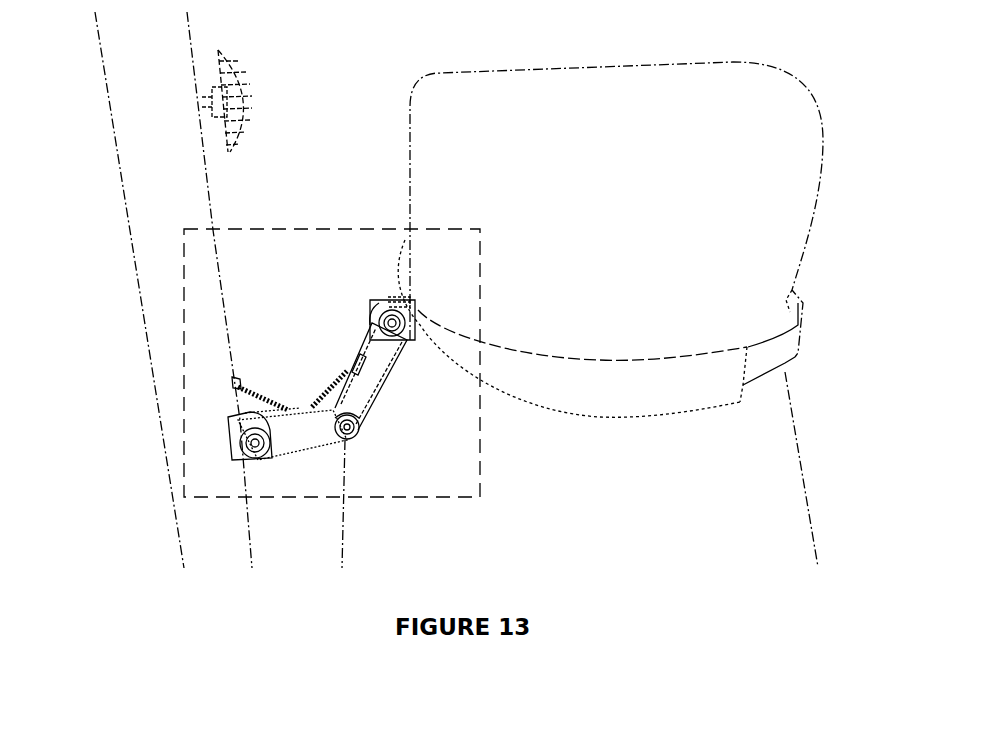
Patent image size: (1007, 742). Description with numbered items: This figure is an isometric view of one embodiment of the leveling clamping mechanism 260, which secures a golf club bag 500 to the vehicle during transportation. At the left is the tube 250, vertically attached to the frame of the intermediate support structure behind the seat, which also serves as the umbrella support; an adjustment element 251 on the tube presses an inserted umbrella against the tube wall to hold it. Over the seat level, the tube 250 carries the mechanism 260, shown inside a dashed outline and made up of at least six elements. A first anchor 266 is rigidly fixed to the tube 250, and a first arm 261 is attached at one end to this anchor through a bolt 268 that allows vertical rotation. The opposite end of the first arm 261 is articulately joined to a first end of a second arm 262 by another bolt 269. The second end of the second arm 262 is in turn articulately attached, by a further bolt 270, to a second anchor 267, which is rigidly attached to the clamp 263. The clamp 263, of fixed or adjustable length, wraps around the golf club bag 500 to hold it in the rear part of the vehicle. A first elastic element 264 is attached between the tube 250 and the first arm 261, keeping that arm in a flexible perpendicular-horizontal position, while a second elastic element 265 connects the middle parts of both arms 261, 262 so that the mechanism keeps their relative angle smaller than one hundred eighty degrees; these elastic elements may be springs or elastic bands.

The tube 250 is at (163, 162).
The adjustment element 251 is at (237, 89).
The leveling clamping mechanism 260 is at (332, 363).
The first arm 261 is at (300, 430).
The second arm 262 is at (373, 352).
The clamp 263 is at (683, 393).
The first elastic element 264 is at (330, 383).
The second elastic element 265 is at (258, 395).
The first anchor 266 is at (233, 450).
The second anchor 267 is at (413, 315).
The bolt 268 is at (255, 447).
The bolt 269 is at (350, 437).
The bolt 270 is at (392, 320).
The golf club bag 500 is at (692, 123).